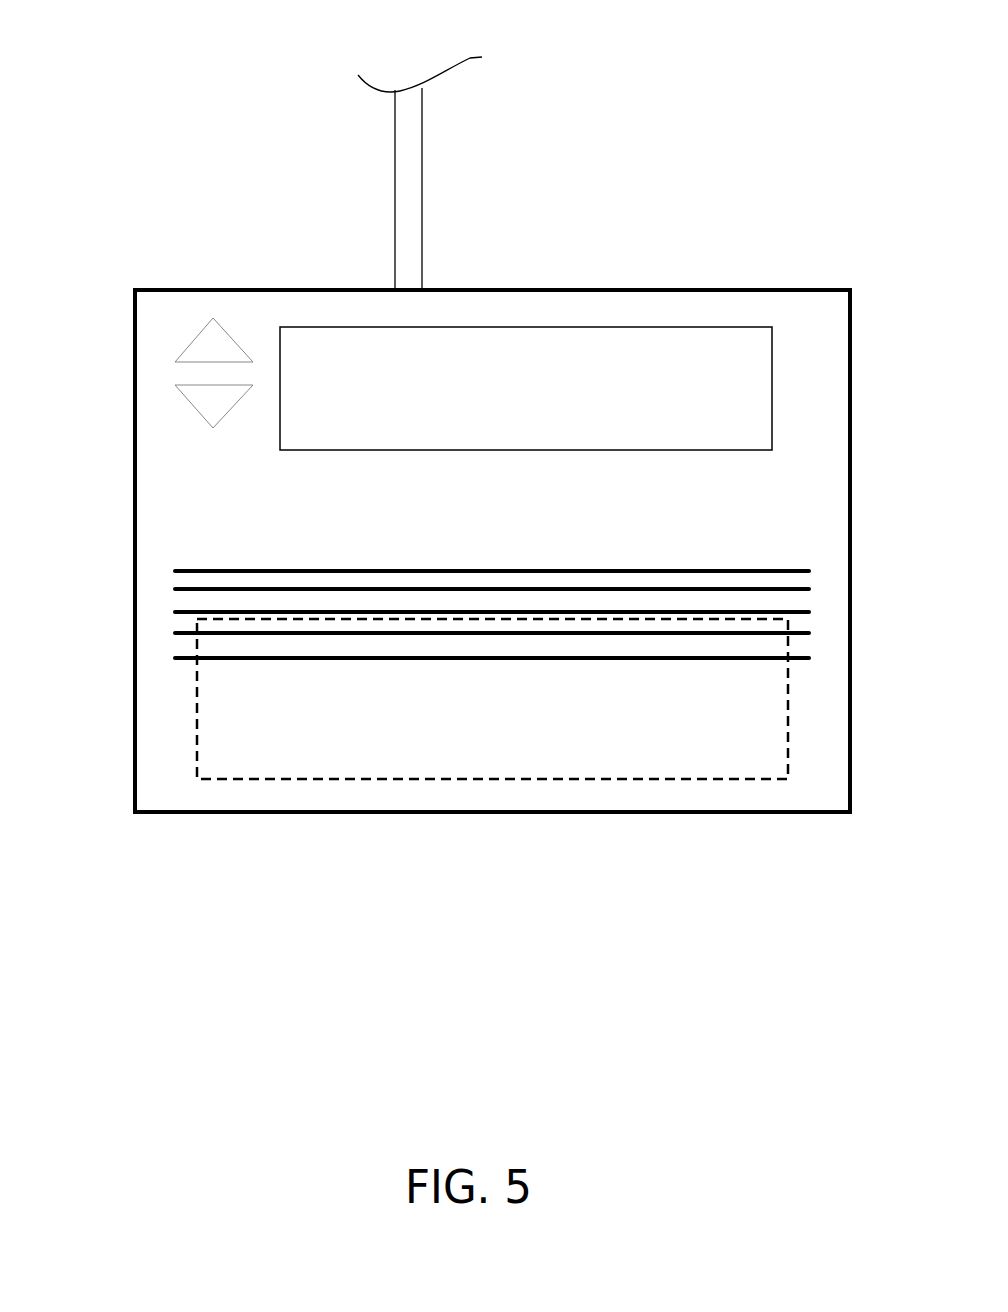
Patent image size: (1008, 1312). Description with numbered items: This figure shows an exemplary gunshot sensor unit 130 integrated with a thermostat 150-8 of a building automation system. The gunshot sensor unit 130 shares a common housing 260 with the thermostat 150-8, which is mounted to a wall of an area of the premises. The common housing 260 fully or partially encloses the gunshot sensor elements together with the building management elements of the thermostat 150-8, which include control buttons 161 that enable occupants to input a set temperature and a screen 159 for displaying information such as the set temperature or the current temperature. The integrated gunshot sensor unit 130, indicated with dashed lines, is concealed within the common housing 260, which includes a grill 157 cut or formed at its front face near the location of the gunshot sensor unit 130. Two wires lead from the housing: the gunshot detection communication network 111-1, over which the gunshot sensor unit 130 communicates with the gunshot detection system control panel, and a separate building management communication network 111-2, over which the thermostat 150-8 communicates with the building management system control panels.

The thermostat 150-8 is at (762, 115).
The common housing 260 is at (227, 288).
The gunshot detection communication network 111-1 is at (395, 183).
The building management communication network 111-2 is at (423, 193).
The screen 159 is at (700, 328).
The control buttons 161 is at (180, 322).
The grill 157 is at (283, 568).
The gunshot sensor unit 130 is at (618, 772).